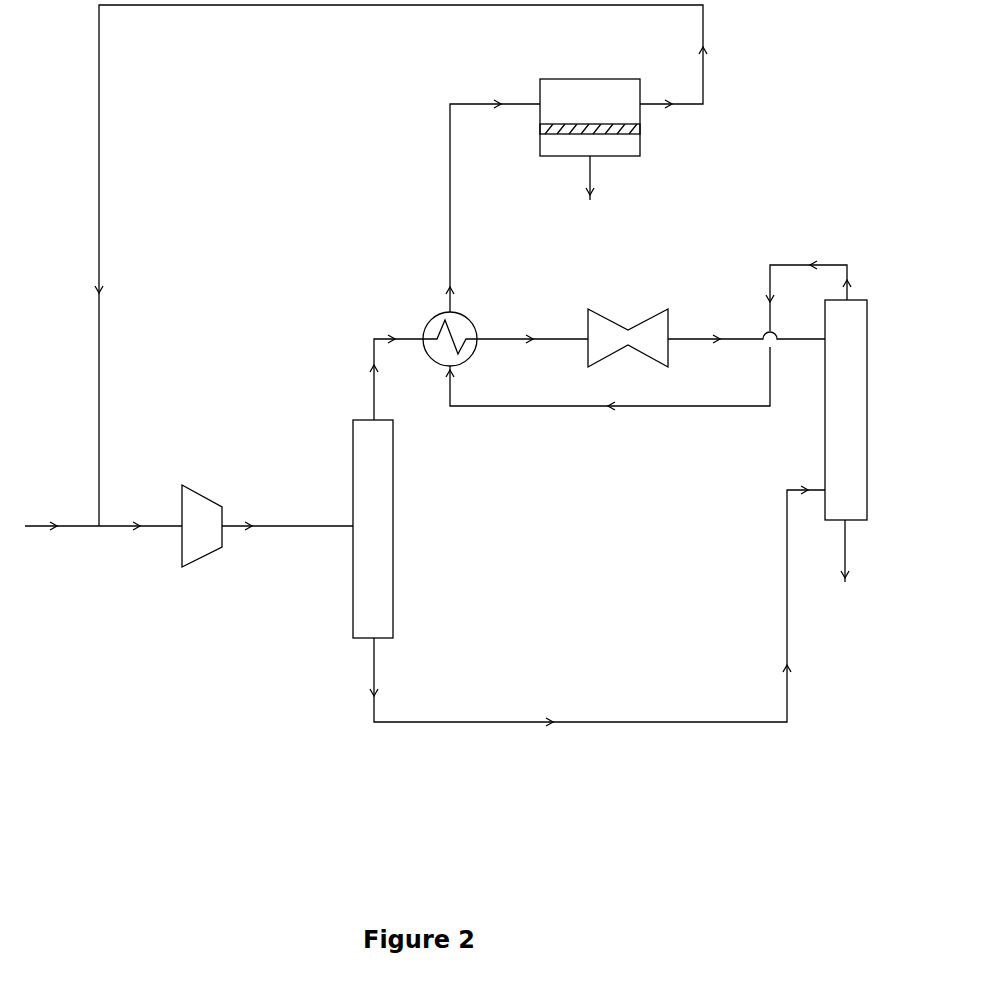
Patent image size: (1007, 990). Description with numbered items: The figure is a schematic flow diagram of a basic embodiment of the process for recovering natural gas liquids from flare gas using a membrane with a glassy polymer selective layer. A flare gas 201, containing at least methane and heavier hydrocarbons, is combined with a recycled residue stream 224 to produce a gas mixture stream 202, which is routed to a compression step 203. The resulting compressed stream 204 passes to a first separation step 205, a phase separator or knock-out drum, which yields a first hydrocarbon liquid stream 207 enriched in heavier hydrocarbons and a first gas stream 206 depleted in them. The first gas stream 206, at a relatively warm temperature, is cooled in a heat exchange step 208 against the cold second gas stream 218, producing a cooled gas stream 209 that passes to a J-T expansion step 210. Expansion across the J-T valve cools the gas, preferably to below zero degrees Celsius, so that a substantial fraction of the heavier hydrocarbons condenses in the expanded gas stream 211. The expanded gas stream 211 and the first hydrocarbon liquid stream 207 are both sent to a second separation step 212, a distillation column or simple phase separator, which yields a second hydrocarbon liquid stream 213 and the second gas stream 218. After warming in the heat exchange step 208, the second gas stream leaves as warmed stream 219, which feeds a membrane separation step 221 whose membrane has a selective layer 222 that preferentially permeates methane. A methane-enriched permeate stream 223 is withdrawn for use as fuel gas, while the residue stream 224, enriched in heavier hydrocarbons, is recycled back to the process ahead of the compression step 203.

The flare gas 201 is at (62, 539).
The gas mixture stream 202 is at (140, 539).
The compression step 203 is at (202, 557).
The compressed stream 204 is at (287, 539).
The first separation step 205 is at (353, 470).
The first gas stream 206 is at (396, 367).
The first hydrocarbon liquid stream 207 is at (597, 617).
The heat exchange step 208 is at (430, 317).
The cooled gas stream 209 is at (532, 329).
The J-T expansion step 210 is at (603, 313).
The expanded gas stream 211 is at (746, 329).
The second separation step 212 is at (825, 460).
The second hydrocarbon liquid stream 213 is at (845, 564).
The second gas stream 218 is at (608, 392).
The warmed stream 219 is at (493, 197).
The membrane separation step 221 is at (587, 79).
The selective layer 222 is at (640, 129).
The permeate stream 223 is at (590, 193).
The residue stream 224 is at (401, 265).